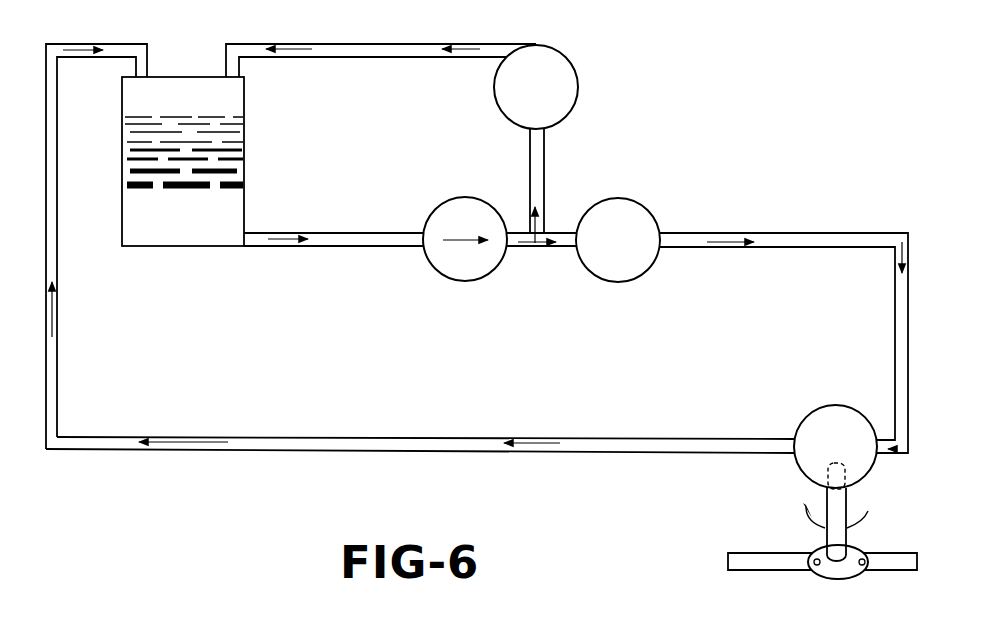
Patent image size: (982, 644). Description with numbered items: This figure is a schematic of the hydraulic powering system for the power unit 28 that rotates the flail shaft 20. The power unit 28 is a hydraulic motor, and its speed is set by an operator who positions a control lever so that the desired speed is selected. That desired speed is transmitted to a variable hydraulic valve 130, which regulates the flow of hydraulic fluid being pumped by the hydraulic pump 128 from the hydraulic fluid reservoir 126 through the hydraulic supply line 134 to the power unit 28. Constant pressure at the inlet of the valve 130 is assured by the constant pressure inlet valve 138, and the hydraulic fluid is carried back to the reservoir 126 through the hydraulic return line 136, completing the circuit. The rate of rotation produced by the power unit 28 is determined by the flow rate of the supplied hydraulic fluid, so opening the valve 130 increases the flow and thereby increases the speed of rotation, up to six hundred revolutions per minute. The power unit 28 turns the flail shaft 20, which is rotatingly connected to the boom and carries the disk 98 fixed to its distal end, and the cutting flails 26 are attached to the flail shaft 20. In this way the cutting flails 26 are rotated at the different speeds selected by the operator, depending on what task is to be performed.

The hydraulic fluid reservoir 126 is at (202, 80).
The constant pressure inlet valve 138 is at (577, 70).
The hydraulic supply line 134 is at (350, 235).
The hydraulic pump 128 is at (494, 262).
The variable hydraulic valve 130 is at (637, 274).
The hydraulic return line 136 is at (458, 441).
The power unit 28 is at (850, 405).
The flail shaft 20 is at (843, 505).
The disk 98 is at (839, 572).
The cutting flails 26 is at (782, 563).